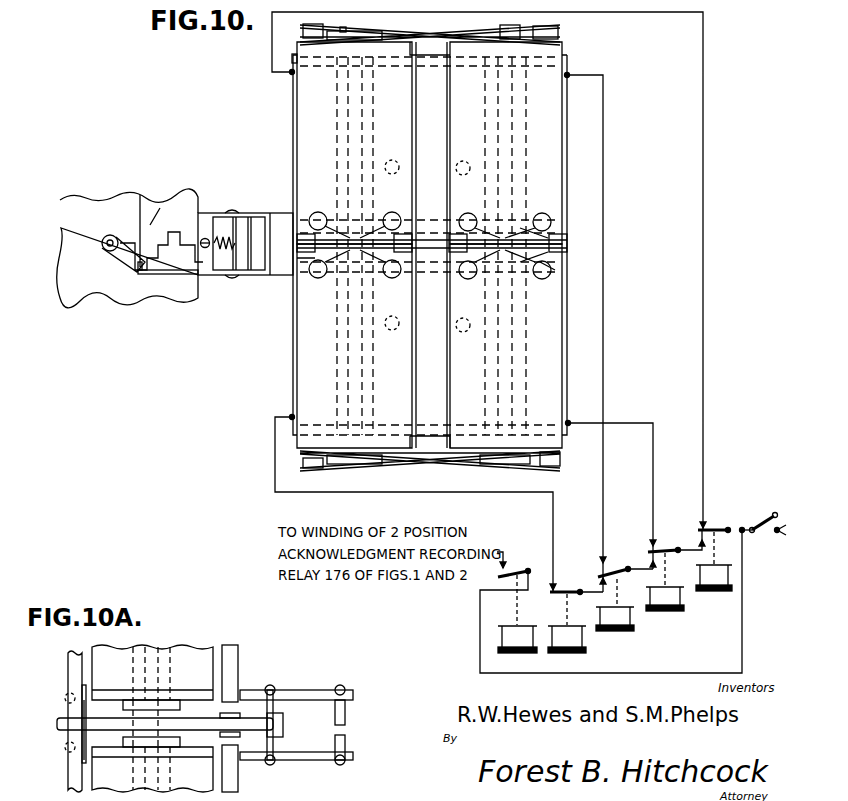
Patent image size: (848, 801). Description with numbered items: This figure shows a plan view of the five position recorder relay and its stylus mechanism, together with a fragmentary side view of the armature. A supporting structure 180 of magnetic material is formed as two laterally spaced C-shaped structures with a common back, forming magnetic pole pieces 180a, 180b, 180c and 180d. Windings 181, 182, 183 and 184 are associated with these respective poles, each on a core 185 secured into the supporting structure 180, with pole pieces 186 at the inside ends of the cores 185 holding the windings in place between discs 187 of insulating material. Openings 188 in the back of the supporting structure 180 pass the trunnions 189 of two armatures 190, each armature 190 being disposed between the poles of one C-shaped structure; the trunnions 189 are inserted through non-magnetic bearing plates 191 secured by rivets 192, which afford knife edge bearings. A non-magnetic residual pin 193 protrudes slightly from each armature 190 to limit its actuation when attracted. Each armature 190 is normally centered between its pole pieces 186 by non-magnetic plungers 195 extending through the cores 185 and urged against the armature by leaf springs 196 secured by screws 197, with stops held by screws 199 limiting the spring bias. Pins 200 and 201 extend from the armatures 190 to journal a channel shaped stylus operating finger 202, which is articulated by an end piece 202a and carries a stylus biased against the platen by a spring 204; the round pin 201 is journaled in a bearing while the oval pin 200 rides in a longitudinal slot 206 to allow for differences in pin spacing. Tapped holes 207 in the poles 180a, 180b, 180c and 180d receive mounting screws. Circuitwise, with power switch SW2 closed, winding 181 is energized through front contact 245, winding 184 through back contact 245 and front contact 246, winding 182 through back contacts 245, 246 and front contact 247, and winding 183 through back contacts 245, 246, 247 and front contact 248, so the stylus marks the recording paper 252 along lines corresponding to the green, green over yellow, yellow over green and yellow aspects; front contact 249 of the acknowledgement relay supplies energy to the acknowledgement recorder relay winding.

In FIG. 10, the magnetic pole piece 180a is at (306, 105).
In FIG. 10, the magnetic pole piece 180b is at (548, 142).
In FIG. 10, the magnetic pole piece 180c is at (306, 364).
In FIG. 10, the magnetic pole piece 180d is at (548, 328).
In FIG. 10, the winding 181 is at (294, 146).
In FIG. 10, the winding 182 is at (563, 183).
In FIG. 10, the winding 183 is at (294, 320).
In FIG. 10, the winding 184 is at (565, 362).
In FIG. 10, the core 185 is at (337, 124).
In FIG. 10, the pole piece 186 is at (455, 234).
In FIG. 10A, the pole piece 186 is at (125, 704).
In FIG. 10, the disc 187 is at (293, 58).
In FIG. 10A, the disc 187 is at (108, 692).
In FIG. 10A, the opening 188 is at (82, 712).
In FIG. 10, the trunnion 189 is at (300, 240).
In FIG. 10A, the trunnion 189 is at (57, 726).
In FIG. 10, the armature 190 is at (300, 256).
In FIG. 10A, the armature 190 is at (197, 716).
In FIG. 10A, the bearing plate 191 is at (84, 762).
In FIG. 10, the rivet 192 is at (322, 204).
In FIG. 10A, the rivet 192 is at (66, 750).
In FIG. 10A, the residual pin 193 is at (243, 713).
In FIG. 10, the plunger 195 is at (376, 118).
In FIG. 10A, the plunger 195 is at (170, 740).
In FIG. 10, the leaf spring 196 is at (432, 474).
In FIG. 10, the screw 197 is at (352, 465).
In FIG. 10, the screw 199 is at (308, 468).
In FIG. 10, the pin 200 is at (548, 228).
In FIG. 10, the pin 201 is at (366, 240).
In FIG. 10, the stylus operating finger 202 is at (268, 213).
In FIG. 10, the end piece 202a is at (192, 278).
In FIG. 10, the spring 204 is at (222, 232).
In FIG. 10, the longitudinal slot 206 is at (555, 259).
In FIG. 10, the tapped hole 207 is at (390, 163).
In FIG. 10, the contact of relay 180RP 245 is at (717, 526).
In FIG. 10, the contact of relay 120—180RP 246 is at (670, 547).
In FIG. 10, the contact of relay 75RP 247 is at (622, 563).
In FIG. 10, the front contact of relay CRFP 248 is at (562, 624).
In FIG. 10, the front contact of relay AC 249 is at (518, 611).
In FIG. 10, the recording paper 252 is at (92, 200).
In FIG. 10A, the supporting structure 180 is at (68, 672).
In FIG. 10, the power switch SW2 is at (766, 520).